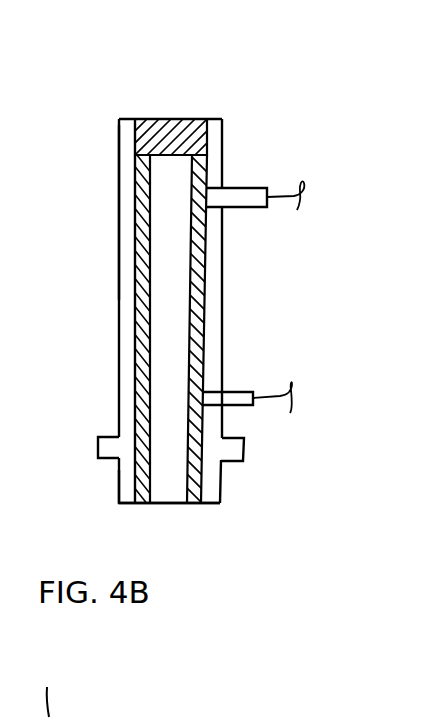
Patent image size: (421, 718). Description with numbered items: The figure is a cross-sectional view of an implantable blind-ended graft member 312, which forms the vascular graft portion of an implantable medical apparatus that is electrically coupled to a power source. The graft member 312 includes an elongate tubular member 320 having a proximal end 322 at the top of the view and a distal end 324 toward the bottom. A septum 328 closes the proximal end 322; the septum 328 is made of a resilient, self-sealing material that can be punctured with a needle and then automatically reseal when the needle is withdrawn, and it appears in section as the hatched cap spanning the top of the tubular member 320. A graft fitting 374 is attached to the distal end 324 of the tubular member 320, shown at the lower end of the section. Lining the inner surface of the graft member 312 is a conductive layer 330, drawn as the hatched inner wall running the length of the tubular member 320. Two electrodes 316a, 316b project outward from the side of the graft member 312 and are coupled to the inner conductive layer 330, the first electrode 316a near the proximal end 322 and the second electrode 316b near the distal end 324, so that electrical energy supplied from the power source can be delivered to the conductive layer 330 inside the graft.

The blind-ended graft member 312 is at (190, 94).
The elongate tubular member 320 is at (120, 214).
The proximal end 322 is at (119, 158).
The septum 328 is at (185, 117).
The conductive layer 330 is at (142, 331).
The distal end 324 is at (119, 410).
The graft fitting 374 is at (120, 492).
The electrode 316a is at (245, 187).
The electrode 316b is at (242, 410).